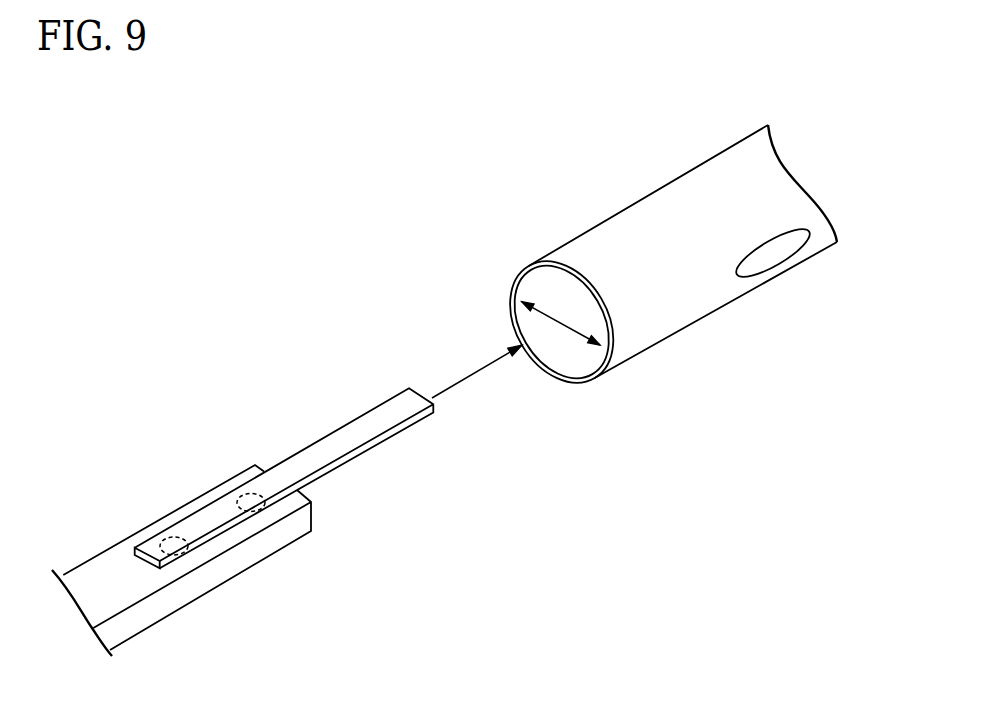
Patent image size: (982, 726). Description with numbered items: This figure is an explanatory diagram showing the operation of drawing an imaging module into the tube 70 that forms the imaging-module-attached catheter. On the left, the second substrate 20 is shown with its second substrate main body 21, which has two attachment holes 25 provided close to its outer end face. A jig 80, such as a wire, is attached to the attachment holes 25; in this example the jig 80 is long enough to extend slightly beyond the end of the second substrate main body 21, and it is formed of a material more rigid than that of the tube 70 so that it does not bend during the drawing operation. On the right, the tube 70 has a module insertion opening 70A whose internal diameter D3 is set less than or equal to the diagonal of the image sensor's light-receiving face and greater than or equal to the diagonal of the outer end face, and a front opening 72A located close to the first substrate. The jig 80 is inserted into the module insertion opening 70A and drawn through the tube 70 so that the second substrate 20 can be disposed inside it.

The second substrate 20 is at (179, 532).
The second substrate main body 21 is at (249, 553).
The attachment holes 25 is at (170, 537).
The jig 80 is at (348, 437).
The tube 70 is at (663, 299).
The module insertion opening 70A is at (567, 372).
The front opening 72A is at (773, 252).
The internal diameter of the module insertion opening D3 is at (563, 322).